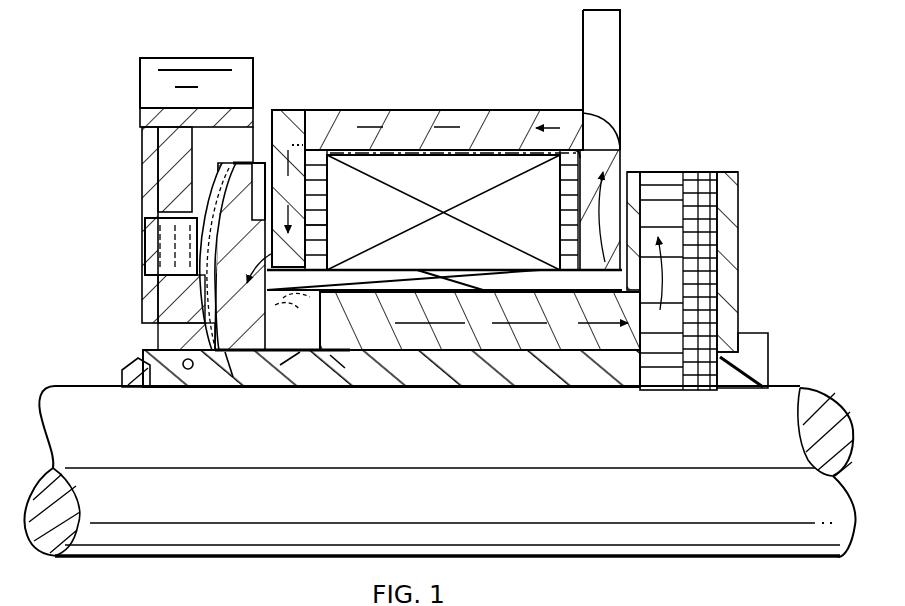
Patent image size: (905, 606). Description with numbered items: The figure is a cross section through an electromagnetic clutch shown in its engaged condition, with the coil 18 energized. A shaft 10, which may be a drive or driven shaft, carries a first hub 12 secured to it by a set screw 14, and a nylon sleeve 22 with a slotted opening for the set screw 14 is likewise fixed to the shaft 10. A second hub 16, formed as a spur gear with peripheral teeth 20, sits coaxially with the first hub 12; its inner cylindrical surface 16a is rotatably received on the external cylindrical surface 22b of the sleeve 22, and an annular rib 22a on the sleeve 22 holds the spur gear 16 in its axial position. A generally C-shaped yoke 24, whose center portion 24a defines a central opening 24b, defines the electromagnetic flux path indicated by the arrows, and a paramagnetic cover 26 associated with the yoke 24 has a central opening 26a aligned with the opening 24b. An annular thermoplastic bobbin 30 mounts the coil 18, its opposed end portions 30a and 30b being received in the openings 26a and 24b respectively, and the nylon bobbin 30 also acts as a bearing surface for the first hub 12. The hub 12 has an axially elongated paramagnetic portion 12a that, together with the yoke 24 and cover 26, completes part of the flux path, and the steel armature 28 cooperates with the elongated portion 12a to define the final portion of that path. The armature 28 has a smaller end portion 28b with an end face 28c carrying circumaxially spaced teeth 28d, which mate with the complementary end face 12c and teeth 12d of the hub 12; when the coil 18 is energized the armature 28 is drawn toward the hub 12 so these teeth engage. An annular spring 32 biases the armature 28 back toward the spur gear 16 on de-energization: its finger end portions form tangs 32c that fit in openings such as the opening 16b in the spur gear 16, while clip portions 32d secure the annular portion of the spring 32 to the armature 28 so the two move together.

The shaft 10 is at (797, 390).
The first hub 12 is at (738, 260).
The axially elongated portion 12a is at (520, 370).
The end face 12c is at (287, 357).
The teeth 12d is at (302, 300).
The set screw 14 is at (697, 172).
The second hub 16 is at (130, 292).
The inner cylindrical surface 16a is at (260, 357).
The opening 16b is at (165, 205).
The coil 18 is at (518, 128).
The peripheral teeth 20 is at (218, 57).
The sleeve 22 is at (768, 373).
The annular rib 22a is at (138, 362).
The external cylindrical surface 22b is at (215, 372).
The yoke 24 is at (450, 108).
The center portion 24a is at (620, 165).
The central opening 24b is at (532, 269).
The cover 26 is at (282, 108).
The central opening 26a is at (360, 278).
The armature 28 is at (227, 164).
The smaller end portion 28b is at (233, 378).
The end face 28c is at (337, 370).
The teeth 28d is at (327, 302).
The bobbin 30 is at (442, 278).
The end portion 30a is at (327, 233).
The end portion 30b is at (553, 230).
The spring 32 is at (204, 193).
The end portion 32c is at (148, 233).
The clip portion 32d is at (327, 201).